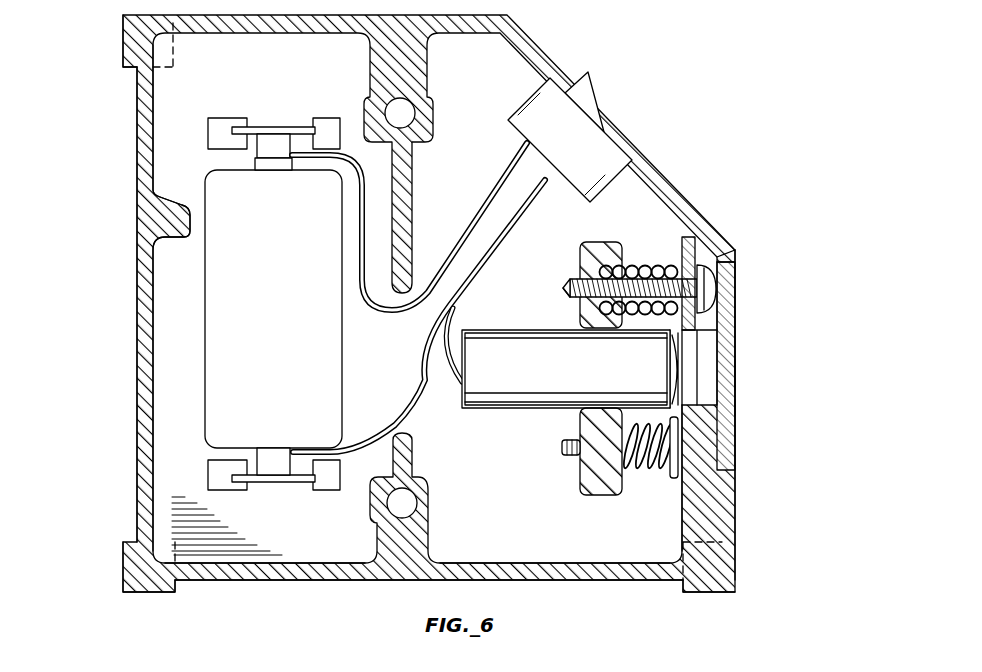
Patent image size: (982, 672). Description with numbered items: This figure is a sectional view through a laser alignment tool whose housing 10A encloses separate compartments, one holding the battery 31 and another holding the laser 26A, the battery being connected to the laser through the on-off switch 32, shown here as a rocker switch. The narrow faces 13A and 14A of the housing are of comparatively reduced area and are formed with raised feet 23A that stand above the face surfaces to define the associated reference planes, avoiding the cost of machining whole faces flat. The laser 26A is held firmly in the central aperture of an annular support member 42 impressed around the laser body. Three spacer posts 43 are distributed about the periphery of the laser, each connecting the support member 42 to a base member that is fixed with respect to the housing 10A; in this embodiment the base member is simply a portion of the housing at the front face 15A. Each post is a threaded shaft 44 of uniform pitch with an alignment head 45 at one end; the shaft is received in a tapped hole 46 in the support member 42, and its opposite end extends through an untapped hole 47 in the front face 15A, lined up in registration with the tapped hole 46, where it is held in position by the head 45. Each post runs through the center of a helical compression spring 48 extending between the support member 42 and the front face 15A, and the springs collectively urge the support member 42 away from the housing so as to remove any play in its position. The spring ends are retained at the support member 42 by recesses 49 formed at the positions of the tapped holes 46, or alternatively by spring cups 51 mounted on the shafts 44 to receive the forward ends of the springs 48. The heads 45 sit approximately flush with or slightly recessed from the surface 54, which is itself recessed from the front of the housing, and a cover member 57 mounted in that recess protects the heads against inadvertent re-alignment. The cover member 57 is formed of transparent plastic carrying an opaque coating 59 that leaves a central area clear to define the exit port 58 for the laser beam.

The housing 10A is at (666, 116).
The narrow face 13A is at (137, 283).
The narrow face 14A is at (358, 582).
The front face 15A is at (737, 523).
The feet 23A is at (123, 44).
The laser 26A is at (483, 330).
The battery 31 is at (291, 313).
The on-off switch 32 is at (598, 82).
The annular support member 42 is at (592, 242).
The spacer posts 43 is at (661, 248).
The threaded shaft 44 is at (563, 282).
The alignment head 45 is at (737, 285).
The tapped holes 46 is at (562, 292).
The holes 47 is at (727, 237).
The helical compression spring 48 is at (637, 268).
The recesses 49 is at (642, 322).
The spring cups 51 is at (695, 245).
The surface 54 is at (737, 316).
The cover member 57 is at (737, 368).
The exit port 58 is at (737, 383).
The opaque coating 59 is at (737, 408).